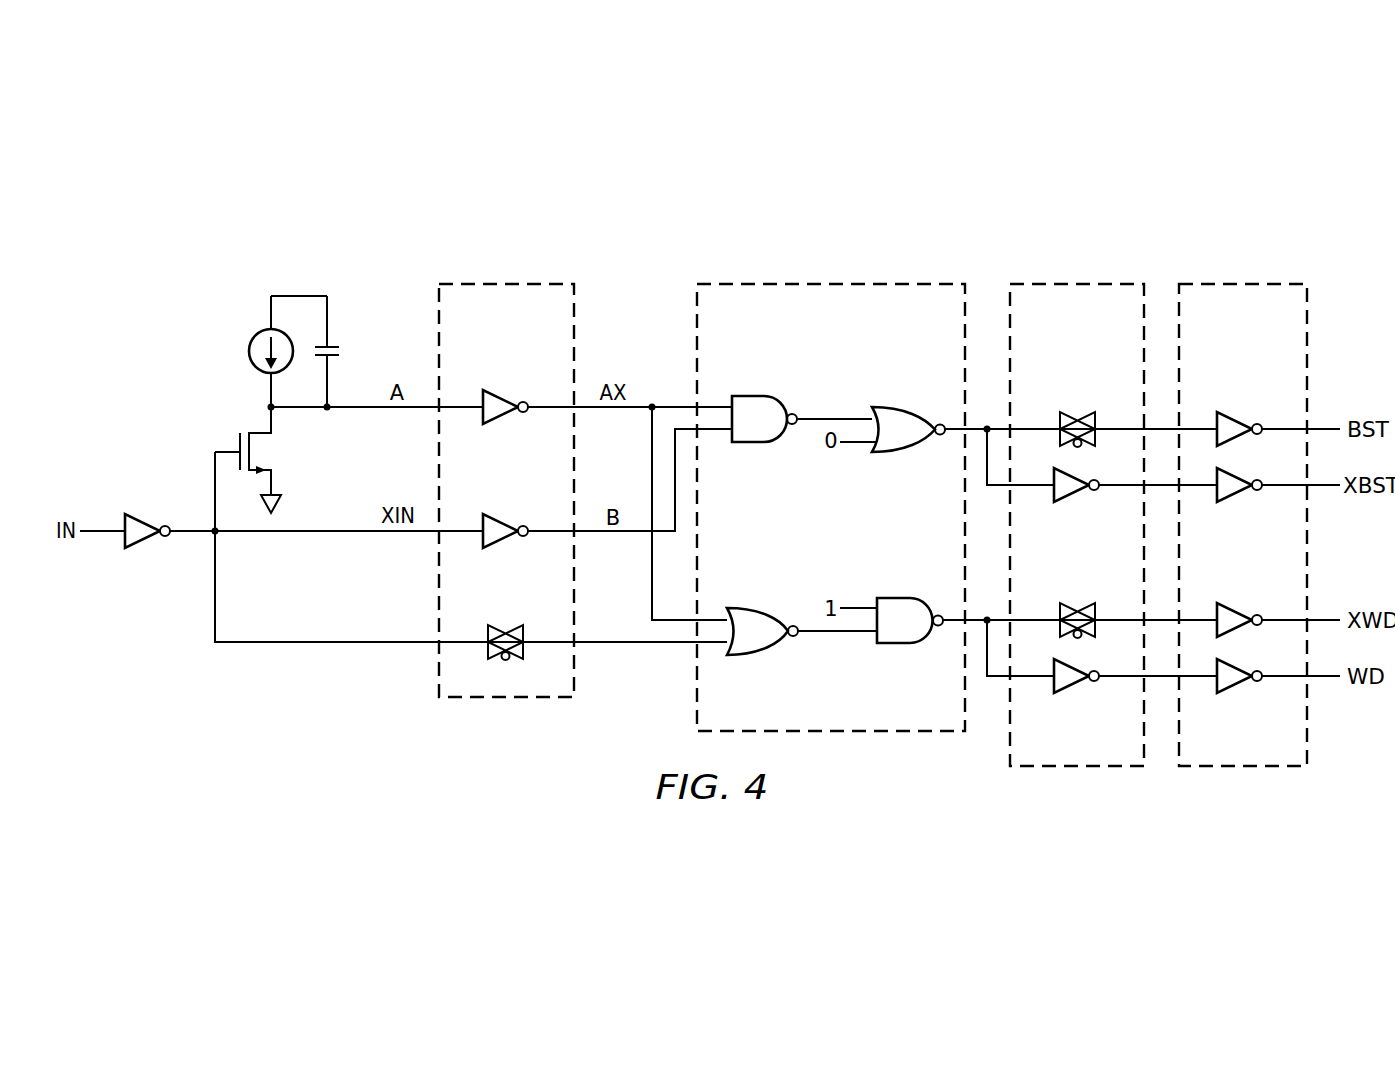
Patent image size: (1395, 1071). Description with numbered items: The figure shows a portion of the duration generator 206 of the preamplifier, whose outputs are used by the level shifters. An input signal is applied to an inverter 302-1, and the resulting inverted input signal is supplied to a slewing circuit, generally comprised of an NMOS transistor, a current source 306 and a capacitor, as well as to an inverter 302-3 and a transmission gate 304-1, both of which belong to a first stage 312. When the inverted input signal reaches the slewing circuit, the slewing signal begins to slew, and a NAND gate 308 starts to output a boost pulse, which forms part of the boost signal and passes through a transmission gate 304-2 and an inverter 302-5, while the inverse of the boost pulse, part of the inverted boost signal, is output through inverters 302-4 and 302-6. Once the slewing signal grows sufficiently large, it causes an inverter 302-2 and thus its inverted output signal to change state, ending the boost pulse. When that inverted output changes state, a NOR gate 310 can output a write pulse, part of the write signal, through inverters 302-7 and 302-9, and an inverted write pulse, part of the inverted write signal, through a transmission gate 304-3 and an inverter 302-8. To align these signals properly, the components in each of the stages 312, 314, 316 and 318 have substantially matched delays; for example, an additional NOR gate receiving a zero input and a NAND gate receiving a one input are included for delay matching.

The duration generator 206 is at (363, 205).
The current source 306 is at (249, 349).
The inverter 302-1 is at (143, 518).
The inverter 302-2 is at (503, 392).
The inverter 302-3 is at (503, 515).
The inverter 302-4 is at (1073, 500).
The inverter 302-5 is at (1238, 418).
The inverter 302-6 is at (1236, 500).
The inverter 302-7 is at (1073, 692).
The inverter 302-8 is at (1238, 608).
The inverter 302-9 is at (1236, 692).
The transmission gate 304-1 is at (499, 625).
The transmission gate 304-2 is at (1071, 415).
The transmission gate 304-3 is at (1071, 606).
The NAND gate 308 is at (853, 462).
The NOR gate 310 is at (853, 650).
The stage 312 is at (505, 283).
The stage 314 is at (808, 283).
The stage 316 is at (1078, 283).
The stage 318 is at (1243, 283).